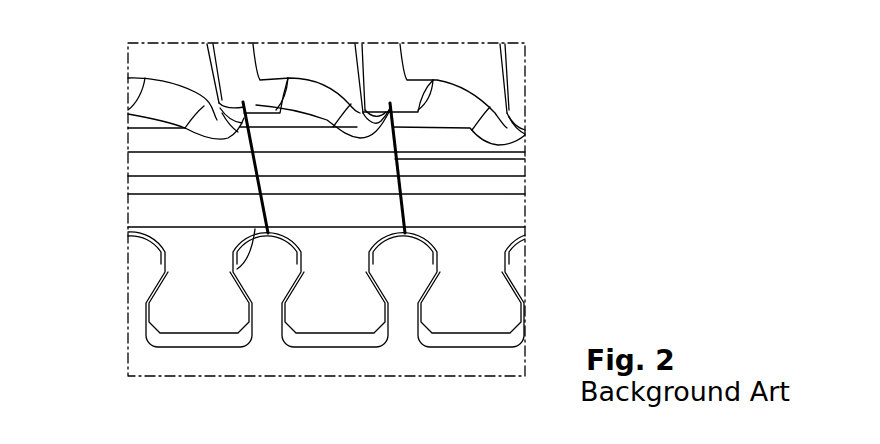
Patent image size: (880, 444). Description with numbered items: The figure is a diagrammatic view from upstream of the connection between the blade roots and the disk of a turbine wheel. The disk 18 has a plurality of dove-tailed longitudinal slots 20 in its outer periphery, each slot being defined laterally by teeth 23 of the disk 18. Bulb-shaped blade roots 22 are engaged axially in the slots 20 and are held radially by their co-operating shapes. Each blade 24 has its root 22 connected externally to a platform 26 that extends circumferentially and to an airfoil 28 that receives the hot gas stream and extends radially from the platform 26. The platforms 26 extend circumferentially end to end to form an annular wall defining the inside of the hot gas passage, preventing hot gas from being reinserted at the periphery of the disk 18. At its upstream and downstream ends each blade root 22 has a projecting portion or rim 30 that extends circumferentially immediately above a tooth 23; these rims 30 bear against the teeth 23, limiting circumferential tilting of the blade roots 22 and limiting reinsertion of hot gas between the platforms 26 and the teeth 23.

The disk 18 is at (178, 63).
The slots 20 is at (483, 348).
The blade roots 22 is at (468, 312).
The teeth 23 is at (240, 269).
The blade 24 is at (514, 82).
The platform 26 is at (142, 172).
The airfoil 28 is at (459, 61).
The projecting portion 30 is at (255, 270).